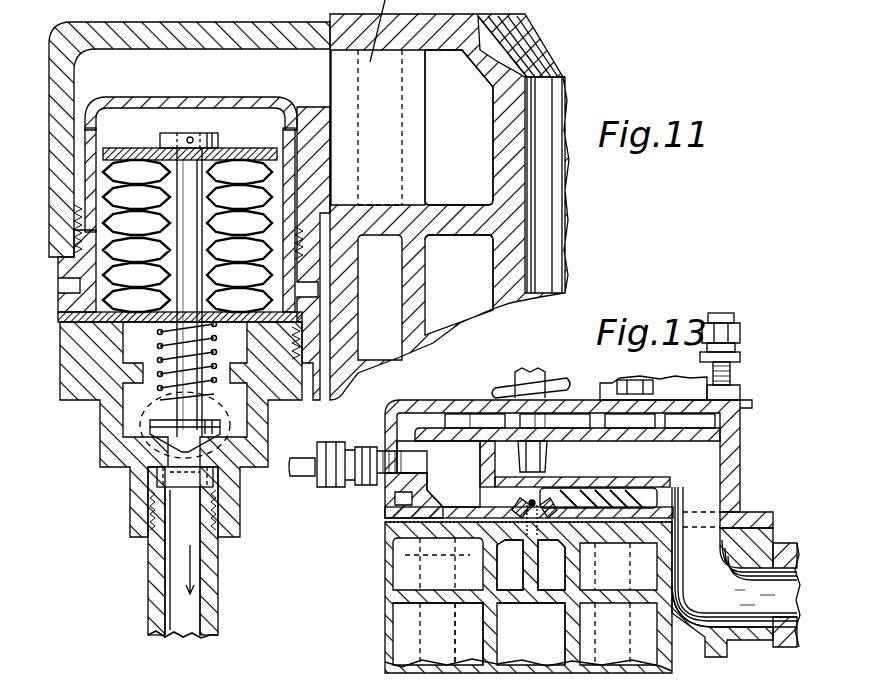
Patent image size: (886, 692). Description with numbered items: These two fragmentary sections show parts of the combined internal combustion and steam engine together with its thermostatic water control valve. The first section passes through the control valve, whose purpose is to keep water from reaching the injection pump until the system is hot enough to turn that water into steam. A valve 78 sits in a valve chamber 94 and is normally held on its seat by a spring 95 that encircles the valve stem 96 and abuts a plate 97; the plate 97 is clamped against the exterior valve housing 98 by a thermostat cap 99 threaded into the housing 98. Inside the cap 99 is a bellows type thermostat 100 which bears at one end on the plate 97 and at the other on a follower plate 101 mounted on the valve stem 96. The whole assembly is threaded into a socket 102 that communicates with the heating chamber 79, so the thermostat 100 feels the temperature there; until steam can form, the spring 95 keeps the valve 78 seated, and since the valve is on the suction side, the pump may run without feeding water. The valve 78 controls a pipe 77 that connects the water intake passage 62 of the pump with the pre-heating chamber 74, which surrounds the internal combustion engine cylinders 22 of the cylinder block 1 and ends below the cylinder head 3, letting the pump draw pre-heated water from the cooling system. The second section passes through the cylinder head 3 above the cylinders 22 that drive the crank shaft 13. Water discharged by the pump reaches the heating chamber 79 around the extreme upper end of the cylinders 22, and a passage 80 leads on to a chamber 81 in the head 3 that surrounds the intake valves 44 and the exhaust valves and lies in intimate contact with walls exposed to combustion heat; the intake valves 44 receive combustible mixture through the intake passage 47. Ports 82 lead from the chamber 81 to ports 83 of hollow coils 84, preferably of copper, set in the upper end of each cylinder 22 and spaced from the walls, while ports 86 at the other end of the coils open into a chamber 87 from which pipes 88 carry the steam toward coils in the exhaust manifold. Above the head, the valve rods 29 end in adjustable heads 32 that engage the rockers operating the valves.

In FIG. 11, the cylinder block 1 is at (512, 300).
In FIG. 13, the cylinder head 3 is at (740, 470).
In FIG. 11, the crank shaft 13 is at (148, 5).
In FIG. 11, the internal combustion engine cylinder 22 is at (568, 98).
In FIG. 13, the internal combustion engine cylinder 22 is at (462, 655).
In FIG. 13, the valve rods 29 is at (730, 390).
In FIG. 13, the adjustable heads 32 is at (742, 335).
In FIG. 13, the intake valves 44 is at (525, 476).
In FIG. 13, the intake passage 47 is at (707, 488).
In FIG. 11, the water intake passage 62 is at (168, 584).
In FIG. 11, the pre-heating chamber 74 is at (459, 272).
In FIG. 13, the pre-heating chamber 74 is at (425, 655).
In FIG. 11, the pipe 77 is at (160, 448).
In FIG. 11, the valve 78 is at (168, 452).
In FIG. 11, the heating chamber 79 is at (459, 127).
In FIG. 13, the heating chamber 79 is at (420, 562).
In FIG. 13, the passage 80 is at (672, 537).
In FIG. 13, the chamber 81 is at (599, 498).
In FIG. 13, the ports 82 is at (572, 493).
In FIG. 13, the ports 83 is at (551, 565).
In FIG. 13, the hollow coils 84 is at (511, 565).
In FIG. 13, the ports 86 is at (514, 507).
In FIG. 13, the chamber 87 is at (432, 508).
In FIG. 13, the pipes 88 is at (312, 478).
In FIG. 11, the valve chamber 94 is at (135, 412).
In FIG. 11, the spring 95 is at (207, 362).
In FIG. 11, the valve stem 96 is at (185, 343).
In FIG. 11, the plate 97 is at (60, 320).
In FIG. 11, the exterior valve housing 98 is at (88, 375).
In FIG. 11, the thermostat cap 99 is at (290, 160).
In FIG. 11, the bellows type thermostat 100 is at (266, 192).
In FIG. 11, the follower plate 101 is at (238, 158).
In FIG. 11, the socket 102 is at (60, 85).